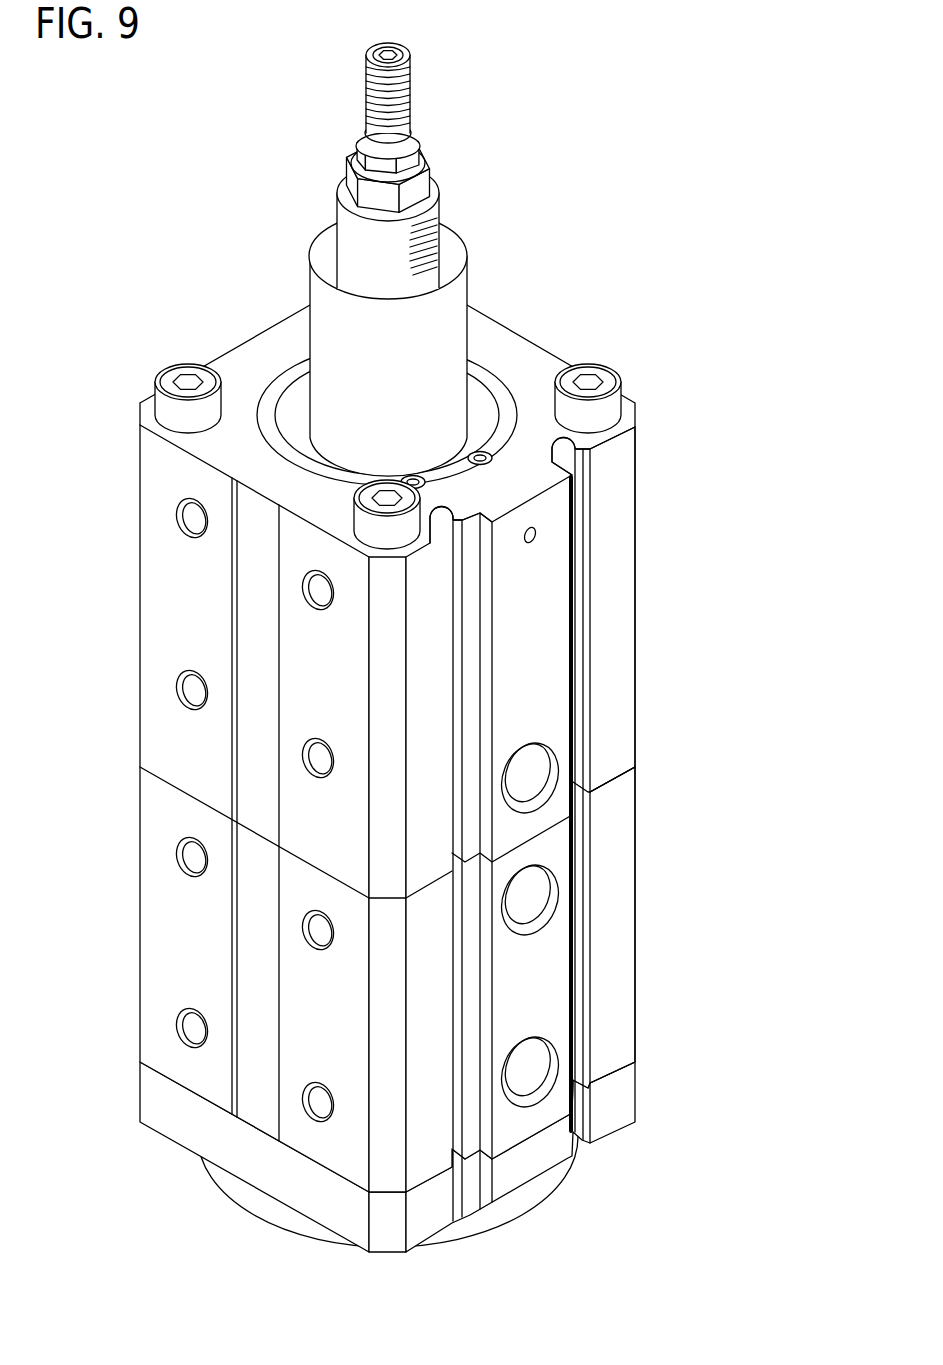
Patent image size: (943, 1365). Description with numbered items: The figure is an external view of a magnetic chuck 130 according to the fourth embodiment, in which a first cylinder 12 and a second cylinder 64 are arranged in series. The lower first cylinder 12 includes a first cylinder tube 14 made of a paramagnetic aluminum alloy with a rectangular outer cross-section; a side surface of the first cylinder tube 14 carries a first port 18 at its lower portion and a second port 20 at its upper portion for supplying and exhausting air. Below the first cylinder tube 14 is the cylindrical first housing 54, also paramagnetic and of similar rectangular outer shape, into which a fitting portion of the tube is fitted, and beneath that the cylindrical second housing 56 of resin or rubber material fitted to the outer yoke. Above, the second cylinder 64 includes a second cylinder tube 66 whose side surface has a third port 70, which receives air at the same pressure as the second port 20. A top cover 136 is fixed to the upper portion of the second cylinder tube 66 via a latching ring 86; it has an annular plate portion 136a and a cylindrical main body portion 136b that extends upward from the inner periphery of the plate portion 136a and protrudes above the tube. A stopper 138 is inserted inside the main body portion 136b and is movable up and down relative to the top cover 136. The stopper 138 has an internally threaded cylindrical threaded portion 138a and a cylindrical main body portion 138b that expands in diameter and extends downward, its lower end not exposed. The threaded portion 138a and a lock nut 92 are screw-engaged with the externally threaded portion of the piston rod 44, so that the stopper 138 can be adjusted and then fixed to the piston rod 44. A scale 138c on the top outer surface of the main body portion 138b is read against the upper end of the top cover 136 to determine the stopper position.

The magnetic chuck 130 is at (172, 122).
The first cylinder 12 is at (434, 763).
The first cylinder tube 14 is at (618, 947).
The first port 18 is at (525, 1064).
The second port 20 is at (525, 913).
The piston rod 44 is at (403, 88).
The first housing 54 is at (618, 1098).
The second housing 56 is at (510, 1207).
The second cylinder 64 is at (645, 503).
The second cylinder tube 66 is at (618, 577).
The third port 70 is at (527, 772).
The latching ring 86 is at (470, 452).
The lock nut 92 is at (413, 135).
The top cover 136 is at (395, 344).
The plate portion 136a is at (300, 407).
The main body portion 136b is at (325, 297).
The stopper 138 is at (391, 215).
The threaded portion 138a is at (418, 178).
The main body portion 138b is at (348, 227).
The scale 138c is at (437, 221).